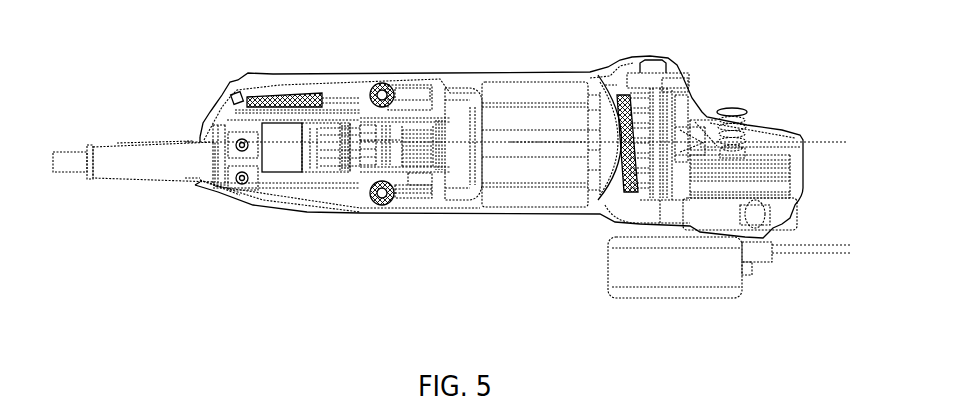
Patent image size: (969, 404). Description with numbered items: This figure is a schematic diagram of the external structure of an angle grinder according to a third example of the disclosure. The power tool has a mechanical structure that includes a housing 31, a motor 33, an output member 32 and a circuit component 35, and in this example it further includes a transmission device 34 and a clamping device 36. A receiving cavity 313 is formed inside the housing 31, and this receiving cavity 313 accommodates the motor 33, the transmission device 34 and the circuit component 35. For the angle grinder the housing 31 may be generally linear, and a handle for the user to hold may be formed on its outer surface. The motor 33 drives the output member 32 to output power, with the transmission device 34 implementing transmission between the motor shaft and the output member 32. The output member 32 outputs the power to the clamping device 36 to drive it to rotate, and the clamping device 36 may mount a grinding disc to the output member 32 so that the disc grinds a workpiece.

The housing 31 is at (350, 77).
The output member 32 is at (627, 77).
The motor 33 is at (522, 97).
The transmission device 34 is at (728, 106).
The circuit component 35 is at (247, 82).
The clamping device 36 is at (772, 242).
The receiving cavity 313 is at (323, 193).